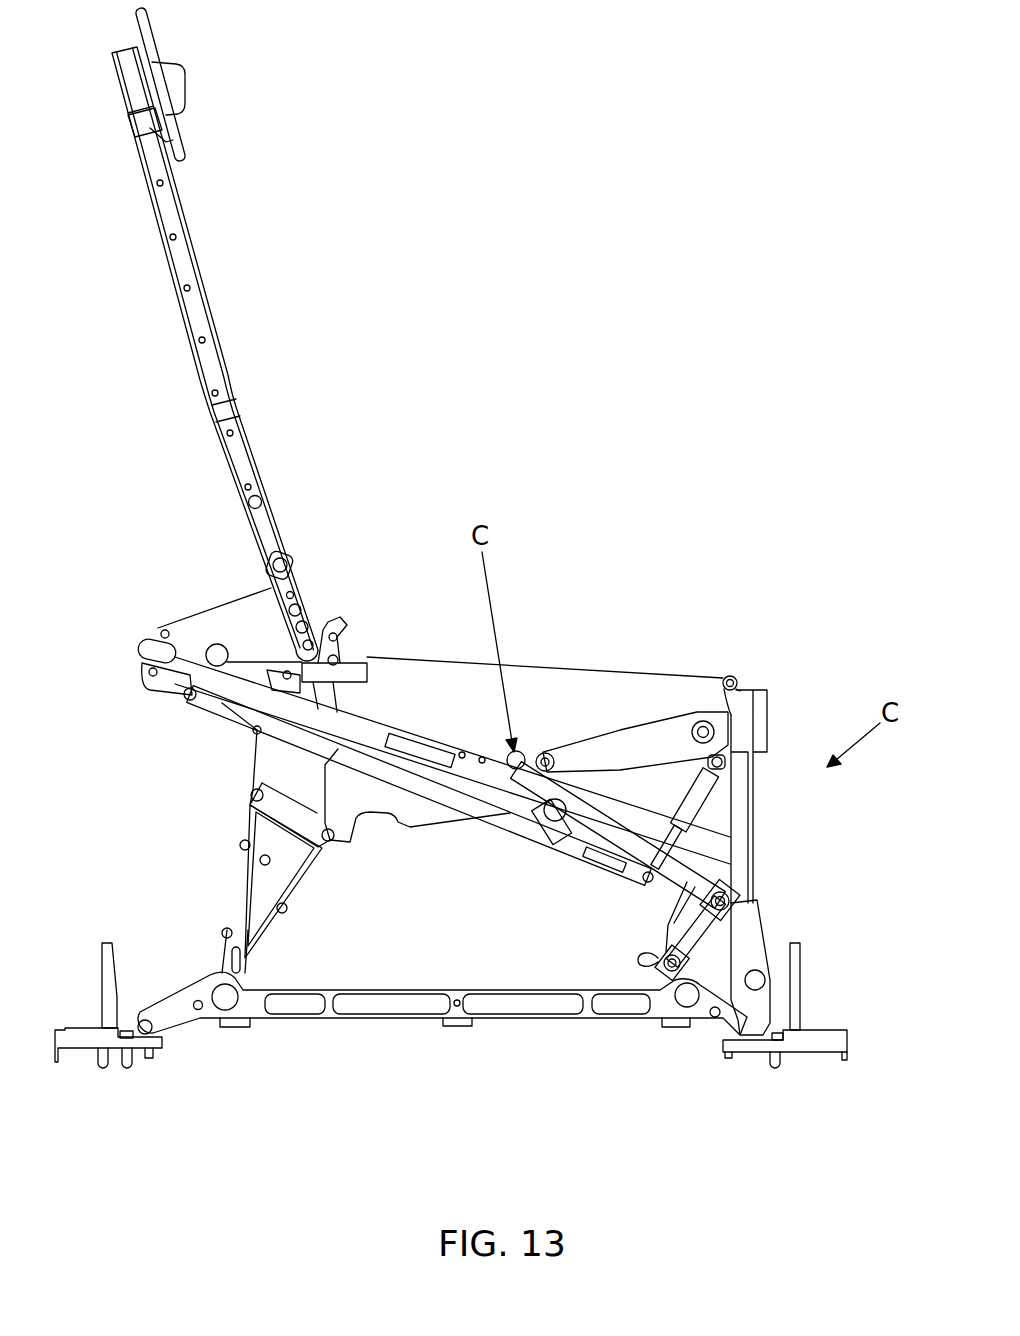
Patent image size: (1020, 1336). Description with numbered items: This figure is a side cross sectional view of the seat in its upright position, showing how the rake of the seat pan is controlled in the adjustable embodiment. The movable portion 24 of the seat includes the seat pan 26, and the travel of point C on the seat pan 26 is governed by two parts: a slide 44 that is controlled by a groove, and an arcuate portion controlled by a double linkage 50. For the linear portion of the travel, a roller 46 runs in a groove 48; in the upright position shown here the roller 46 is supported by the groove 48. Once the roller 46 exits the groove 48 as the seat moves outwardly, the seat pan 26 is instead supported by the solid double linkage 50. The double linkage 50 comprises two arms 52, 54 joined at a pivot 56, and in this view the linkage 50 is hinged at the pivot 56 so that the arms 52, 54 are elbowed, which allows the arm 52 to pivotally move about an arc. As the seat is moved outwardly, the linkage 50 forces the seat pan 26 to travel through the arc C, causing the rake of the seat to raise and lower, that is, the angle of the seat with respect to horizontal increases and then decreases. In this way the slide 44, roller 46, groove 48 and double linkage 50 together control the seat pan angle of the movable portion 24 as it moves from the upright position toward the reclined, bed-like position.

The movable portion 24 is at (742, 650).
The seat pan 26 is at (428, 658).
The slide 44 is at (583, 850).
The roller 46 is at (498, 770).
The groove 48 is at (656, 745).
The double linkage 50 is at (743, 873).
The arm 52 is at (643, 880).
The arm 54 is at (722, 930).
The pivot 56 is at (740, 893).